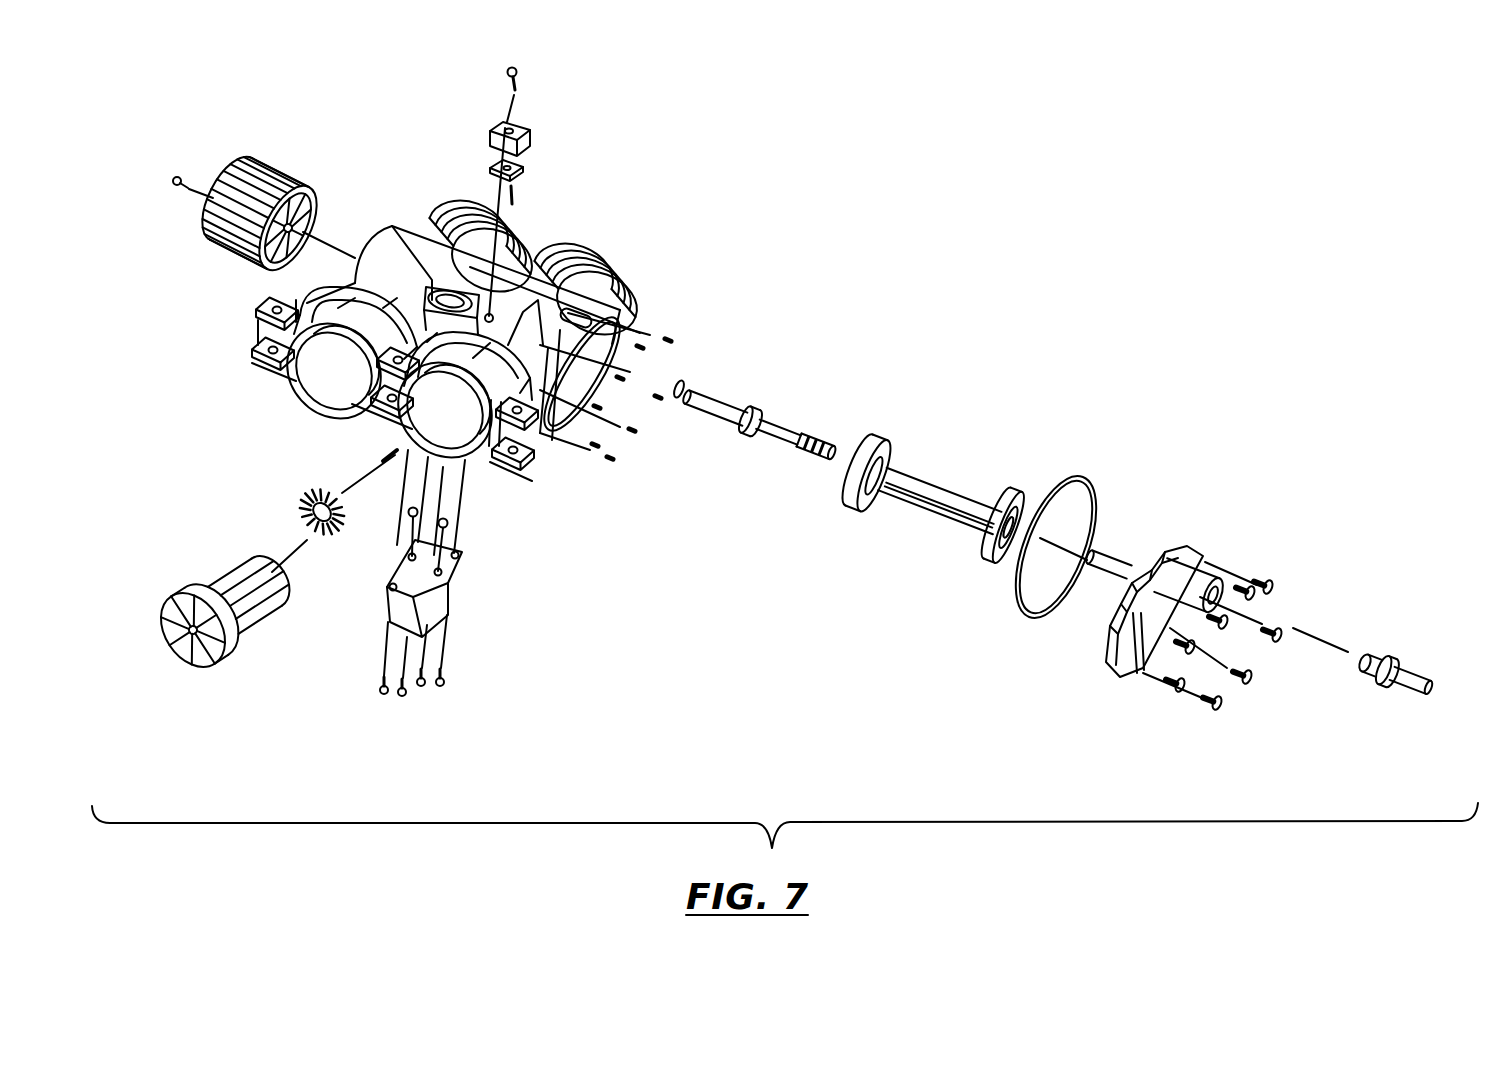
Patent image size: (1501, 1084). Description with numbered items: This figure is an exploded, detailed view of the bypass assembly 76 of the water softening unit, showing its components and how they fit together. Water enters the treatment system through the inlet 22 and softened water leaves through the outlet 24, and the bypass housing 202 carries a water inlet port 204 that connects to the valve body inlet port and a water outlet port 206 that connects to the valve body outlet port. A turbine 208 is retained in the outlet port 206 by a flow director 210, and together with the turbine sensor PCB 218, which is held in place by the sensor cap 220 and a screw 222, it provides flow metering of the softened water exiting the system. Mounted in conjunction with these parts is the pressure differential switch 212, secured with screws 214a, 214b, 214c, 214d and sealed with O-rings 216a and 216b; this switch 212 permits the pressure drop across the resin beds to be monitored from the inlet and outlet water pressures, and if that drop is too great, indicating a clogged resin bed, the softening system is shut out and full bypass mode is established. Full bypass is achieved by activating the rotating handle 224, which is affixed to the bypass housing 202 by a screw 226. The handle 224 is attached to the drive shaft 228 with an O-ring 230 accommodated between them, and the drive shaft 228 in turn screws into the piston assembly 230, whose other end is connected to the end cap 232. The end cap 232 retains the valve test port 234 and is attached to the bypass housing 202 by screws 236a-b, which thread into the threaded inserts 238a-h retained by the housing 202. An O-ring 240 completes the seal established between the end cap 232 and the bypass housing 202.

The bypass assembly 76 is at (930, 256).
The inlet 22 is at (457, 204).
The outlet 24 is at (606, 266).
The bypass housing 202 is at (268, 370).
The water inlet port 204 is at (330, 398).
The water outlet port 206 is at (466, 445).
The turbine 208 is at (306, 525).
The flow director 210 is at (243, 644).
The pressure differential switch 212 is at (455, 593).
The screw 214a is at (381, 695).
The screw 214b is at (401, 698).
The screw 214c is at (420, 690).
The screw 214d is at (442, 690).
The O-ring 216a is at (440, 505).
The O-ring 216b is at (448, 530).
The turbine sensor PCB 218 is at (526, 171).
The sensor cap 220 is at (531, 133).
The screw 222 is at (521, 83).
The rotating handle 224 is at (268, 165).
The screw 226 is at (183, 177).
The drive shaft 228 is at (738, 408).
The O-ring / piston assembly 230 is at (683, 382).
The end cap 232 is at (1196, 556).
The valve test port 234 is at (1392, 660).
The screws 236a-b is at (1196, 716).
The threaded inserts 238a-h is at (624, 464).
The O-ring 240 is at (1080, 492).